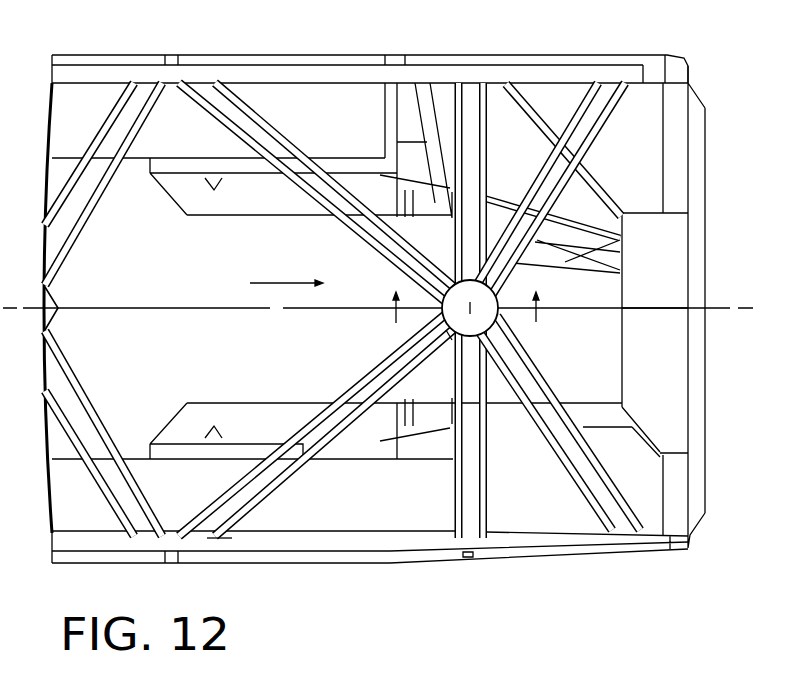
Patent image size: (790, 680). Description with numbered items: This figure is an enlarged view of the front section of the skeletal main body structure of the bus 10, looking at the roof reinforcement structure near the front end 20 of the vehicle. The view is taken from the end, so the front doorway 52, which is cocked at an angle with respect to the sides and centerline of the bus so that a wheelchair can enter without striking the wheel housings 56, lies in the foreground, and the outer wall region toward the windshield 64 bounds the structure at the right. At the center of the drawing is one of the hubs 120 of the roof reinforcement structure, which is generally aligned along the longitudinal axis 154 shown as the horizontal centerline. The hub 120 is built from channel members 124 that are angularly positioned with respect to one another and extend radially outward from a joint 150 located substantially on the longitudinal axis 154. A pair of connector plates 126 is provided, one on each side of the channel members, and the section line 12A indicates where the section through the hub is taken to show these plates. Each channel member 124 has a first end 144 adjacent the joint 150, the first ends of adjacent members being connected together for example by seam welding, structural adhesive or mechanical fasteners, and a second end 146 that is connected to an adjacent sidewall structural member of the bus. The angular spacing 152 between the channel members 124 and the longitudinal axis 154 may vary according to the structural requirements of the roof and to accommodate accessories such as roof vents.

The bus 10 is at (138, 53).
The front end 20 is at (683, 38).
The front doorway 52 is at (640, 552).
The wheel housings 56 is at (175, 200).
The windshield 64 is at (707, 262).
The hub 120 is at (260, 282).
The channel member 124 is at (343, 386).
The connector plate 126 is at (470, 300).
The first end 144 is at (452, 340).
The second end 146 is at (227, 537).
The joint 150 is at (480, 318).
The angular spacing 152 is at (373, 250).
The longitudinal axis 154 is at (90, 312).
The section line 12A is at (462, 322).